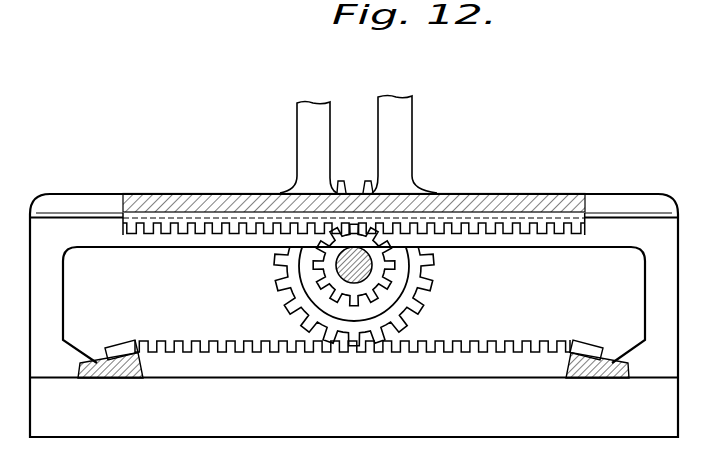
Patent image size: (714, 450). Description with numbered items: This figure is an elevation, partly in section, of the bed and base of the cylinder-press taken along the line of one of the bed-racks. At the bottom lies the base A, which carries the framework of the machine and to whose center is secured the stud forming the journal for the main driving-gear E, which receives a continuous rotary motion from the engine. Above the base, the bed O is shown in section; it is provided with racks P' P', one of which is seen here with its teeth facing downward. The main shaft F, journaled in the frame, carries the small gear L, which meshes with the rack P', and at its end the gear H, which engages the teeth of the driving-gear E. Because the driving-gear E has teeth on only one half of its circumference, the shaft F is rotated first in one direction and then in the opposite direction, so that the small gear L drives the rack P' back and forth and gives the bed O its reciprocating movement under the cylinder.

The bed O is at (112, 199).
The rack P' is at (354, 244).
The small gear L is at (332, 268).
The main shaft F is at (372, 268).
The gear H is at (420, 298).
The main driving-gear E is at (232, 328).
The base A is at (354, 394).